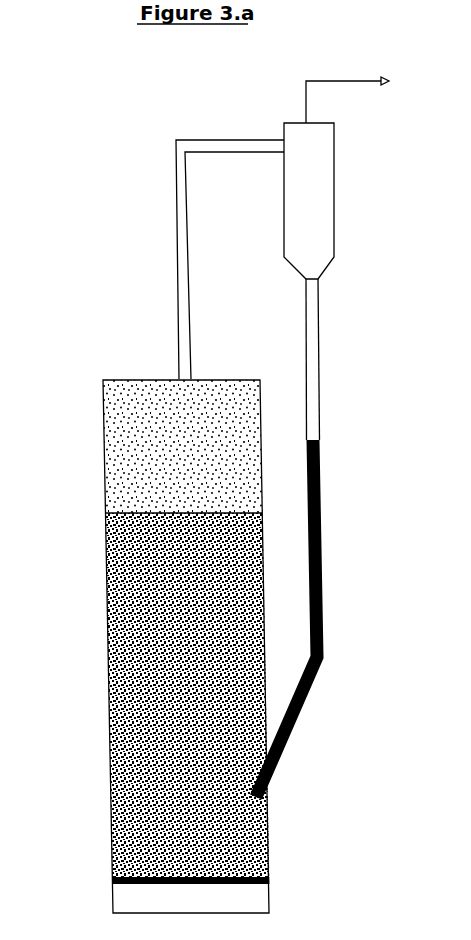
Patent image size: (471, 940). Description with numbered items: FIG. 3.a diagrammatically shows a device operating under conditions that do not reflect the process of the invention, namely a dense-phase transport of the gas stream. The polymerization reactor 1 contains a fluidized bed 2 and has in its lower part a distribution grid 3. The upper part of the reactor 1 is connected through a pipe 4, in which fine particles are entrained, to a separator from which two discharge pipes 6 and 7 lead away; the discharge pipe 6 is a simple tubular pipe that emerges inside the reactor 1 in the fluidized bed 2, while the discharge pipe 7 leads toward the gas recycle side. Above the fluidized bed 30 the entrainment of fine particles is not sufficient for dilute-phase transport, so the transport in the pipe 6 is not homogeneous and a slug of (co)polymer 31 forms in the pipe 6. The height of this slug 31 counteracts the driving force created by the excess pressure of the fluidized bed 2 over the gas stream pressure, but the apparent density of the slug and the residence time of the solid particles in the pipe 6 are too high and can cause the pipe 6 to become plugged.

The polymerization reactor 1 is at (143, 646).
The fluidized bed 2 is at (153, 695).
The distribution grid 3 is at (171, 509).
The pipe 4 is at (281, 190).
The discharge pipe 6 is at (344, 359).
The discharge pipe 7 is at (359, 110).
The fluidized bed 30 is at (151, 446).
The slug of (co)polymer 31 is at (324, 618).